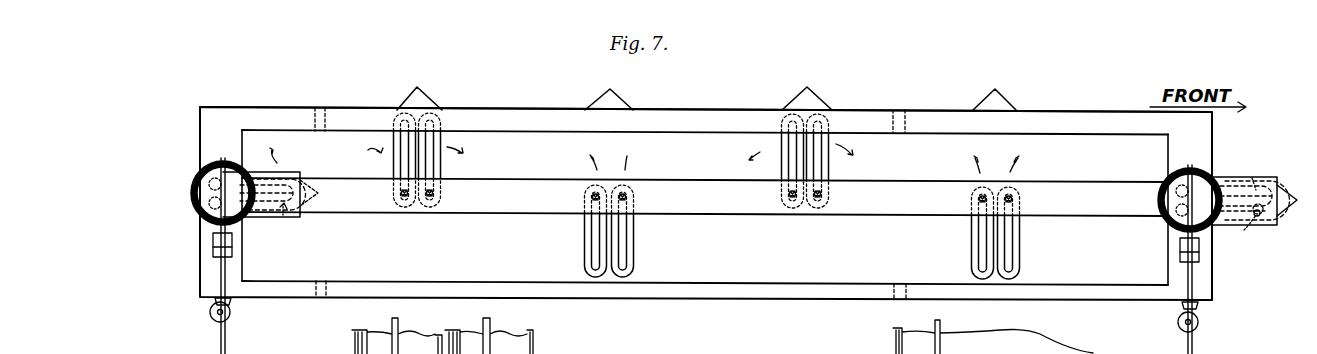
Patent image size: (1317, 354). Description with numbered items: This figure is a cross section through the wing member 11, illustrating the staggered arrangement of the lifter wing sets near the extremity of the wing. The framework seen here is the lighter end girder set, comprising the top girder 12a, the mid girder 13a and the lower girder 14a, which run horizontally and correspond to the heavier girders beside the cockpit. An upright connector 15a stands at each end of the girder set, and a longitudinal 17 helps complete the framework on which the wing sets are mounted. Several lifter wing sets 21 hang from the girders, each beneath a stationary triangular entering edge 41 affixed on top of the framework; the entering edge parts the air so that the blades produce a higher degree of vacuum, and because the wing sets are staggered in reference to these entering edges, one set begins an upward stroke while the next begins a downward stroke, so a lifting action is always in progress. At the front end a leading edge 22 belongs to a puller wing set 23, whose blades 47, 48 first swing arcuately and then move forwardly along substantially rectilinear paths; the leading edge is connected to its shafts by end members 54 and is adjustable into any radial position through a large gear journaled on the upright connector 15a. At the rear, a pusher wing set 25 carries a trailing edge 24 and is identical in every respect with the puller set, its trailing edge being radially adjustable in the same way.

The wing member 11 is at (1105, 105).
The end girder 12a is at (705, 101).
The end mid girder 13a is at (715, 171).
The end girder 14a is at (716, 279).
The upright connector 15a is at (210, 142).
The longitudinal 17 is at (322, 110).
The lifter wing set 21 is at (582, 237).
The leading edge 22 is at (1280, 187).
The puller wing set 23 is at (1273, 209).
The trailing edge 24 is at (303, 201).
The pusher wing set 25 is at (284, 212).
The entering edge 41 is at (420, 104).
The puller blade 47 is at (1248, 229).
The puller blade 48 is at (1233, 150).
The end member 54 is at (1258, 215).